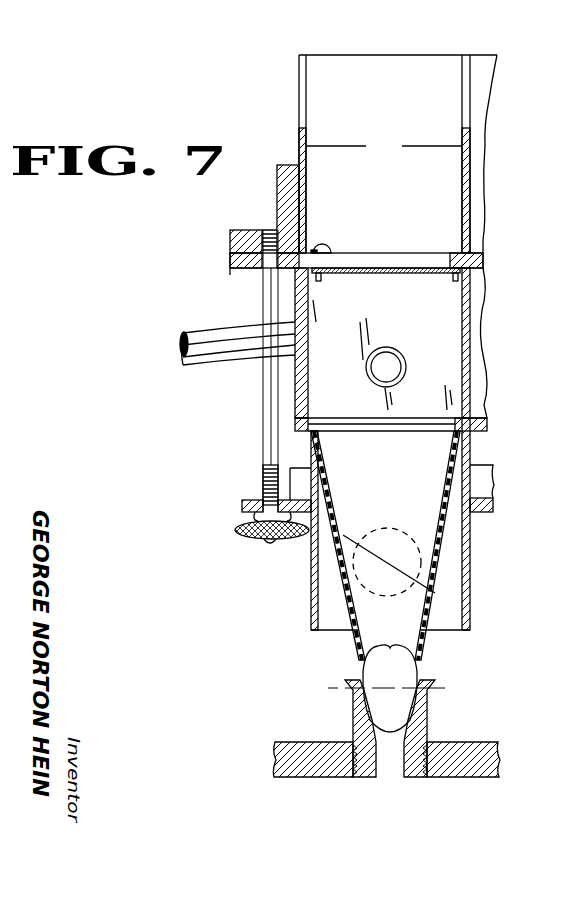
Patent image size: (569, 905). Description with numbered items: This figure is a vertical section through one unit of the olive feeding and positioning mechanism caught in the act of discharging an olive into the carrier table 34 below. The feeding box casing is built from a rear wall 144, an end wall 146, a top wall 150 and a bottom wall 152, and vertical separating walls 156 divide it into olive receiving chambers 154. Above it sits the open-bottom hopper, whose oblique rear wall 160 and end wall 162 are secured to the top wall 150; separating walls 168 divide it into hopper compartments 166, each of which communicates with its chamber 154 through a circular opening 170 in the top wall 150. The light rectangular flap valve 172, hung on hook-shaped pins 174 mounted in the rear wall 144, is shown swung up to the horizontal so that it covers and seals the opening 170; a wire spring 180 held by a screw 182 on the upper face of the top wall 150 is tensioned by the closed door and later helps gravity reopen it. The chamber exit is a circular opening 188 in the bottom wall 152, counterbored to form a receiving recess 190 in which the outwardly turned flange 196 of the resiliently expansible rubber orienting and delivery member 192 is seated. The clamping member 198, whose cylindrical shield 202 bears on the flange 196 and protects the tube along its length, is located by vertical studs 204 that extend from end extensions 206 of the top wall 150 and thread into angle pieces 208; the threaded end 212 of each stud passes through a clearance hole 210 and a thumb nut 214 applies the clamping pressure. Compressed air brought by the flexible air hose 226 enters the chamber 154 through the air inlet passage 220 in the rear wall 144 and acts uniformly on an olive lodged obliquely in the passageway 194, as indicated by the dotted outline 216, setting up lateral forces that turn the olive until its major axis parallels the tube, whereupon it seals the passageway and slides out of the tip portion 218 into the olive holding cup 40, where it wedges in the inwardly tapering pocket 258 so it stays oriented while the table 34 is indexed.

The carrier table 34 is at (492, 746).
The olive holding cup 40 is at (428, 711).
The rear wall 144 is at (484, 318).
The end wall 146 is at (297, 392).
The top wall 150 is at (232, 268).
The bottom wall 152 is at (485, 432).
The olive receiving chamber 154 is at (460, 318).
The vertical separating wall 156 is at (470, 364).
The rear wall of hopper 160 is at (400, 180).
The hopper end wall 162 is at (299, 146).
The hopper compartment 166 is at (384, 147).
The vertical separating wall of hopper 168 is at (470, 176).
The circular opening 170 is at (360, 262).
The flap valve 172 is at (440, 274).
The hook-shaped pin 174 is at (322, 278).
The wire spring 180 is at (332, 250).
The screw 182 is at (328, 242).
The exit opening 188 is at (350, 432).
The receiving recess 190 is at (300, 426).
The orienting and delivery member 192 is at (457, 470).
The passageway 194 is at (398, 481).
The outwardly turned flange 196 is at (314, 428).
The clamping member 198 is at (492, 503).
The cylindrical shield 202 is at (470, 567).
The vertical stud 204 is at (265, 442).
The end extension 206 is at (237, 258).
The angle piece 208 is at (252, 224).
The clearance hole 210 is at (302, 468).
The threaded end 212 is at (262, 478).
The thumb nut 214 is at (262, 537).
The dotted outline of olive 216 is at (390, 530).
The tip portion 218 is at (418, 657).
The air inlet passage 220 is at (388, 362).
The flexible air hose 226 is at (238, 333).
The pocket 258 is at (422, 681).